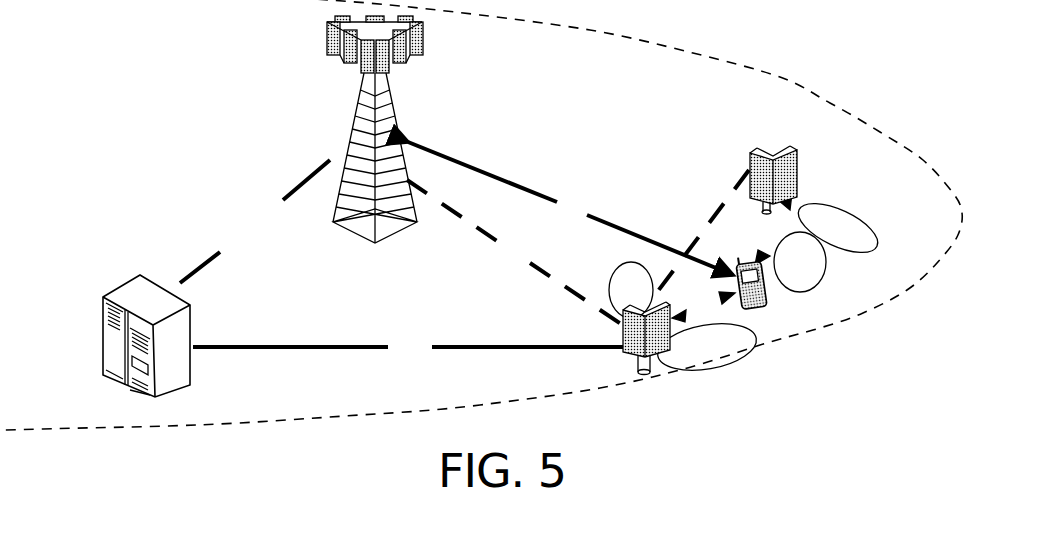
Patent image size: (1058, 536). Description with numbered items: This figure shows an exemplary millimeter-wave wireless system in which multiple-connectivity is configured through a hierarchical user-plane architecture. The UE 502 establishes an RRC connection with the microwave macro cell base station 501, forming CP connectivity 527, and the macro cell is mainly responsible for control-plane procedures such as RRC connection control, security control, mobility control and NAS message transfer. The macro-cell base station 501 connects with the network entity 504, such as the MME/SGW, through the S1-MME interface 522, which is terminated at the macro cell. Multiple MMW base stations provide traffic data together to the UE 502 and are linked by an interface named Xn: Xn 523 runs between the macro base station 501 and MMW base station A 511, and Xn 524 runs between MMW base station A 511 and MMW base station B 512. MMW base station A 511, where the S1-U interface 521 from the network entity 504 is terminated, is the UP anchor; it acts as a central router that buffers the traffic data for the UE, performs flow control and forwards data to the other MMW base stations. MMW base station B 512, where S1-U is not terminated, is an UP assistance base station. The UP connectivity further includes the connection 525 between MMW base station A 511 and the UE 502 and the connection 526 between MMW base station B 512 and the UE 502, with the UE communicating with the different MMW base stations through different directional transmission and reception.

The microwave macro cell base station 501 is at (421, 40).
The UE 502 is at (766, 287).
The network entity 504 is at (183, 298).
The MMW base station A 511 is at (628, 307).
The MMW base station B 512 is at (751, 161).
The S1-U interface 521 is at (408, 348).
The S1-MME interface 522 is at (255, 221).
The Xn interface 523 is at (517, 254).
The Xn interface 524 is at (702, 232).
The UP connection 525 is at (703, 306).
The UP connection 526 is at (772, 229).
The CP connectivity 527 is at (570, 208).